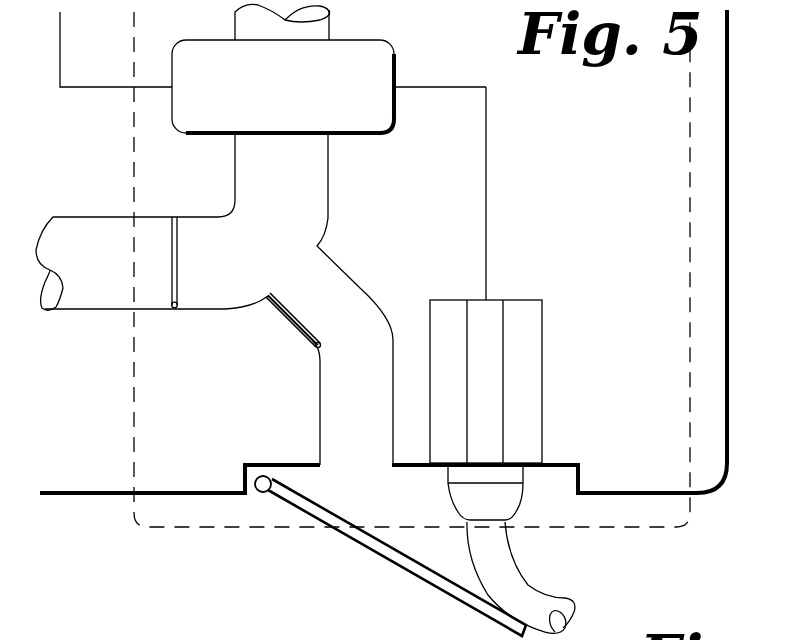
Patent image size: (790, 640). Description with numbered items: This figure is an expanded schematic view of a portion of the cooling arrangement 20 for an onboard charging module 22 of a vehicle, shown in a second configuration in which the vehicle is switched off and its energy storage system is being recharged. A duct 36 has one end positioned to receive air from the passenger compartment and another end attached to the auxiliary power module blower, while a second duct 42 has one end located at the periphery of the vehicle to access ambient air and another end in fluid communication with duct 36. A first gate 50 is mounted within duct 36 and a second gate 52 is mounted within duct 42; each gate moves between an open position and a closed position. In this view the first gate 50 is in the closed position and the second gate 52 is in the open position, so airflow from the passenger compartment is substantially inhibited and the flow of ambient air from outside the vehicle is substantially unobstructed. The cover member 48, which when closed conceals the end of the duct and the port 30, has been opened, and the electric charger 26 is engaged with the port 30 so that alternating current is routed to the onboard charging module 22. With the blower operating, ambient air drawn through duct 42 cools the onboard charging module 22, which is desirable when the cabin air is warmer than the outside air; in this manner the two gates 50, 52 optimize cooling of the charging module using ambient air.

The cooling arrangement 20 is at (131, 155).
The onboard charging module 22 is at (410, 32).
The electric charger 26 is at (513, 559).
The port 30 is at (543, 360).
The duct 36 is at (102, 216).
The duct 42 is at (358, 284).
The cover member 48 is at (378, 563).
The first gate 50 is at (180, 258).
The second gate 52 is at (300, 306).